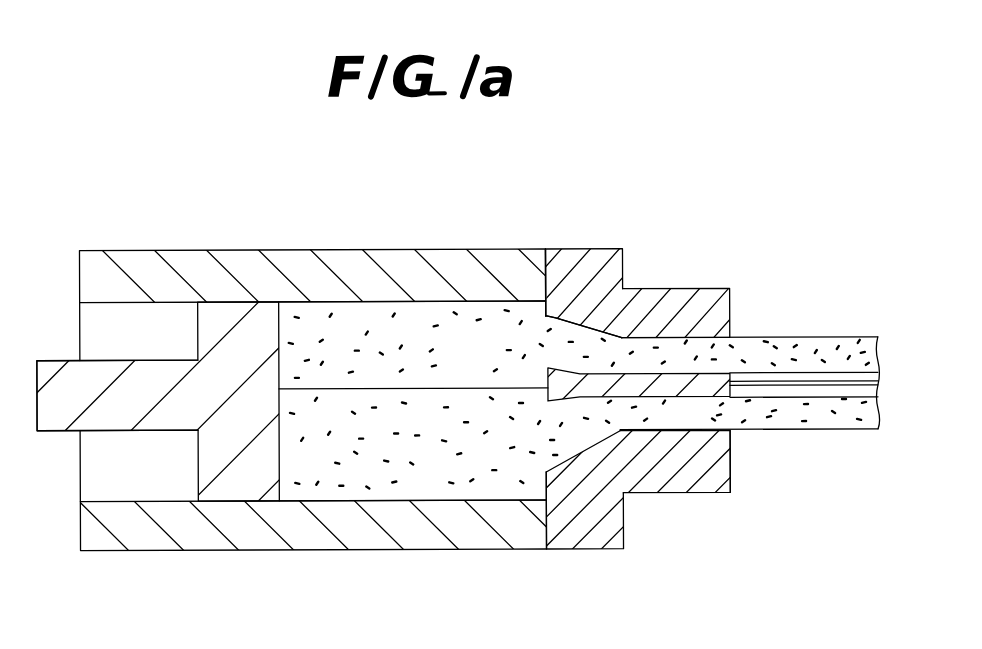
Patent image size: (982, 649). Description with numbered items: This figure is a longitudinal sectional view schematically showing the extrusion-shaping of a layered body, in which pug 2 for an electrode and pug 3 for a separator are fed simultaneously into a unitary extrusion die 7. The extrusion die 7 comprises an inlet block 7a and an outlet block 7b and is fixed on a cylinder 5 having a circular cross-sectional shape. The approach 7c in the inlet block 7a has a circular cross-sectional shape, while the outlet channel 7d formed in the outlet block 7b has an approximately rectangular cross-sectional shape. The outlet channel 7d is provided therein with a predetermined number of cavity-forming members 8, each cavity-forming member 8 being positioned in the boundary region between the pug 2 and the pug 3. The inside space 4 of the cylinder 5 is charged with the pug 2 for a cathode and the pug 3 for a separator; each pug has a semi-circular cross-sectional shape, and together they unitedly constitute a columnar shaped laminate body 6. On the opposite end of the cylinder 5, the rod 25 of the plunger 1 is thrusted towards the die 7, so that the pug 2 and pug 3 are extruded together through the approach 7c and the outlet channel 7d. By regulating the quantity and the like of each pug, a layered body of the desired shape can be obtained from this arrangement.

The plunger 1 is at (379, 324).
The pug for an electrode 2 is at (311, 322).
The pug for a separator 3 is at (433, 473).
The inside space 4 is at (370, 303).
The cylinder 5 is at (449, 268).
The columnar shaped laminate body 6 is at (517, 281).
The extrusion die 7 is at (593, 324).
The inlet block 7a is at (579, 254).
The outlet block 7b is at (667, 313).
The approach 7c is at (556, 318).
The outlet channel 7d is at (668, 423).
The cavity-forming member 8 is at (714, 388).
The rod 25 is at (103, 367).